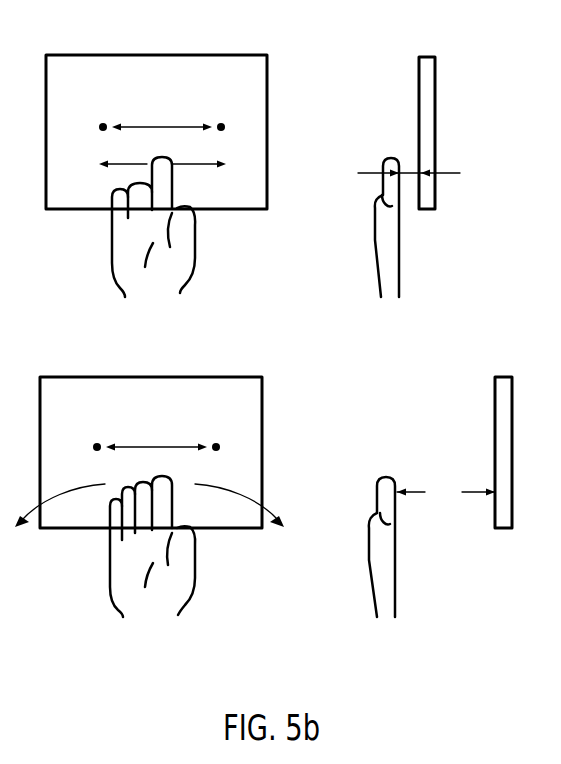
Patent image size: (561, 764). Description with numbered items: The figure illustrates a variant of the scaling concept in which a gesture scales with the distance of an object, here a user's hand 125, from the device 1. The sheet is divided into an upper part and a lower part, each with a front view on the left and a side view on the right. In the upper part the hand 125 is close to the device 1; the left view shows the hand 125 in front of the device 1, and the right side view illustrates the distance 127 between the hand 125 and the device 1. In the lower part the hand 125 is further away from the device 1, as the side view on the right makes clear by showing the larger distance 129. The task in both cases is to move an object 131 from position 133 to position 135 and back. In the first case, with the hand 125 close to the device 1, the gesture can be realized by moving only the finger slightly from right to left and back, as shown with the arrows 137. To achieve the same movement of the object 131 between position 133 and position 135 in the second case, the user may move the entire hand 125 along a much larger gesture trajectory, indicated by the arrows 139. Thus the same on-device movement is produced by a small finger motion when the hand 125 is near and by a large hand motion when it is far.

The device 1 is at (53, 55).
The hand 125 is at (194, 247).
The distance 127 is at (429, 173).
The distance 129 is at (446, 492).
The object 131 is at (225, 128).
The position 133 is at (218, 272).
The position 135 is at (101, 272).
The arrows 137 is at (118, 163).
The arrows 139 is at (56, 495).